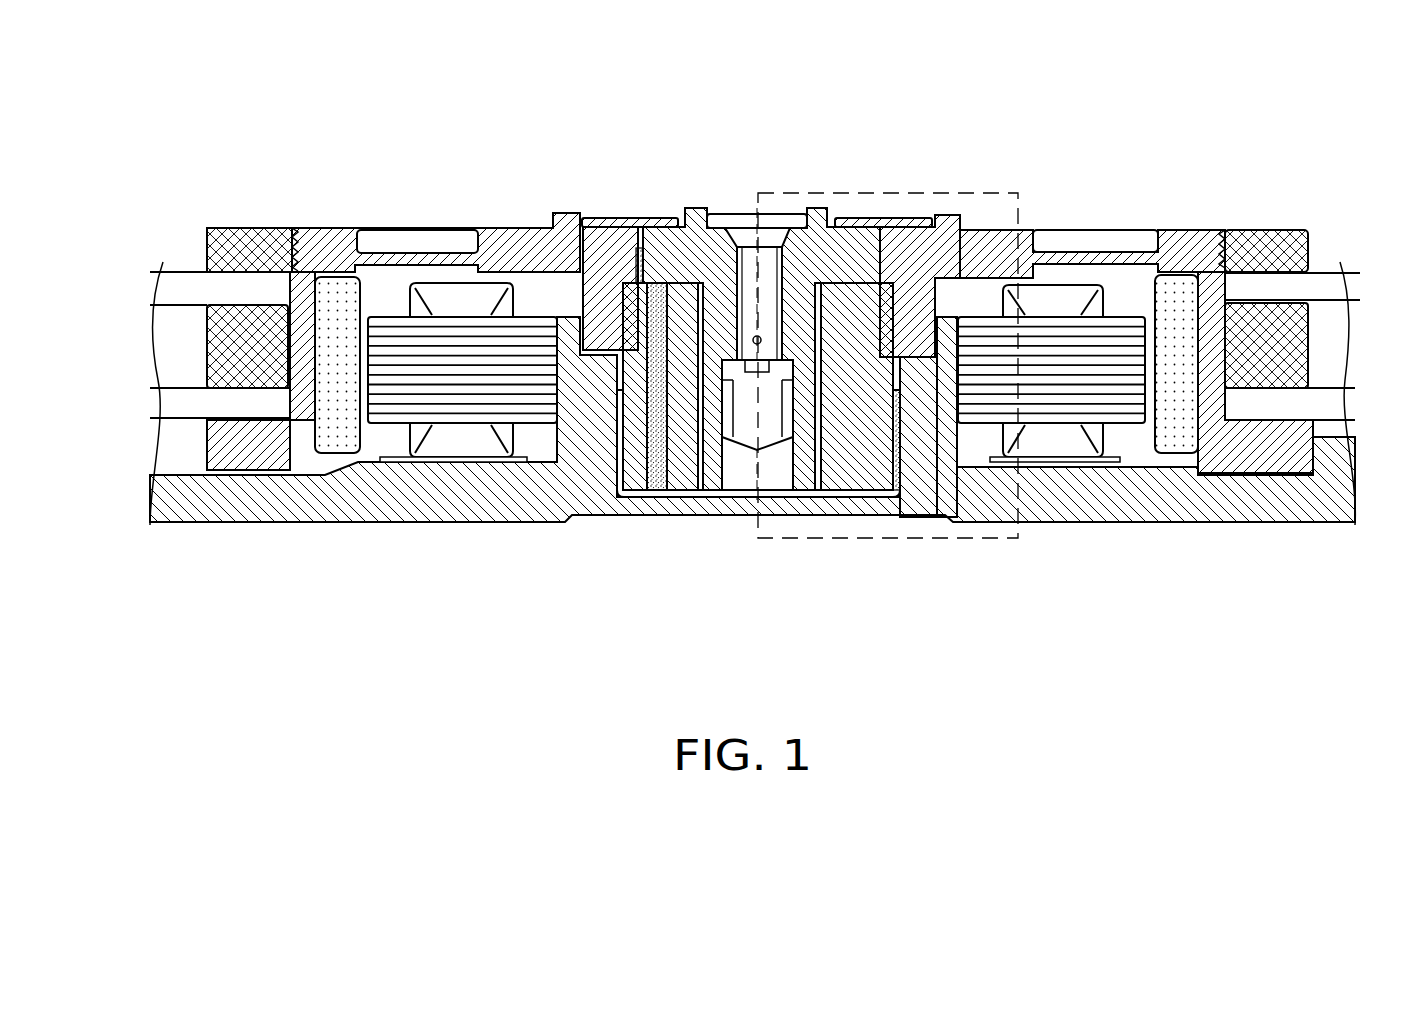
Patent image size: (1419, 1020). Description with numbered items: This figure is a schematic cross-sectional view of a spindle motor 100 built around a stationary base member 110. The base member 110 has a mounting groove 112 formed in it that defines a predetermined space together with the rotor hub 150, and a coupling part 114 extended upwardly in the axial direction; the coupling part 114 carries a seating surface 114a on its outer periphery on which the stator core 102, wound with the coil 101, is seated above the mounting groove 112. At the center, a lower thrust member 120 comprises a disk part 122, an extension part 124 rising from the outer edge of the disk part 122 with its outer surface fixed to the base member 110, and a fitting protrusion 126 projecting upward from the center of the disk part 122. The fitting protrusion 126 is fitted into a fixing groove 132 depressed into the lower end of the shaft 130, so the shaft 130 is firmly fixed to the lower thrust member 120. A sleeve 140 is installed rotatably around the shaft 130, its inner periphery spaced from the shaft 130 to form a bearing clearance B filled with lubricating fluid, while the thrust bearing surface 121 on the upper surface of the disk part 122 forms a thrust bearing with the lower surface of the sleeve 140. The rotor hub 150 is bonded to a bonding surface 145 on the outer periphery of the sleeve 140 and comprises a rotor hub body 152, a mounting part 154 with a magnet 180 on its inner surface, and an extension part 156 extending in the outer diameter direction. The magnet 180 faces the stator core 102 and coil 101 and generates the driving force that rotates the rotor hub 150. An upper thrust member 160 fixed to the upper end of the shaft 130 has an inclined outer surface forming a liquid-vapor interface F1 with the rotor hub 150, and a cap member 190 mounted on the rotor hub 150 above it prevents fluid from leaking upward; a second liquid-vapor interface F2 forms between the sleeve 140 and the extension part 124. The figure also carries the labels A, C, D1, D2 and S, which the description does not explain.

The spindle motor 100 is at (825, 51).
The base member 110 is at (1132, 500).
The mounting groove 112 is at (1290, 470).
The coupling part 114 is at (950, 430).
The seating surface 114a is at (1003, 415).
The lower thrust member 120 is at (727, 474).
The thrust bearing surface 121 is at (782, 495).
The disk part 122 is at (657, 490).
The extension part 124 is at (562, 460).
The fitting protrusion 126 is at (725, 450).
The shaft 130 is at (712, 310).
The fixing groove 132 is at (767, 397).
The sleeve 140 is at (635, 400).
The bonding surface 145 is at (885, 257).
The rotor hub 150 is at (365, 307).
The rotor hub body 152 is at (238, 440).
The mounting part 154 is at (265, 312).
The extension part 156 is at (507, 248).
The upper thrust member 160 is at (840, 218).
The magnet 180 is at (333, 442).
The cap member 190 is at (662, 218).
The coil 101 is at (473, 443).
The stator core 102 is at (412, 402).
The detail region A is at (985, 192).
The bearing clearance B is at (937, 268).
The right cap C is at (1290, 235).
The lower shaft D1 is at (1337, 402).
The upper shaft D2 is at (1333, 273).
The bearing block S is at (1297, 333).
The liquid-vapor interface F1 is at (636, 248).
The second liquid-vapor interface F2 is at (920, 395).